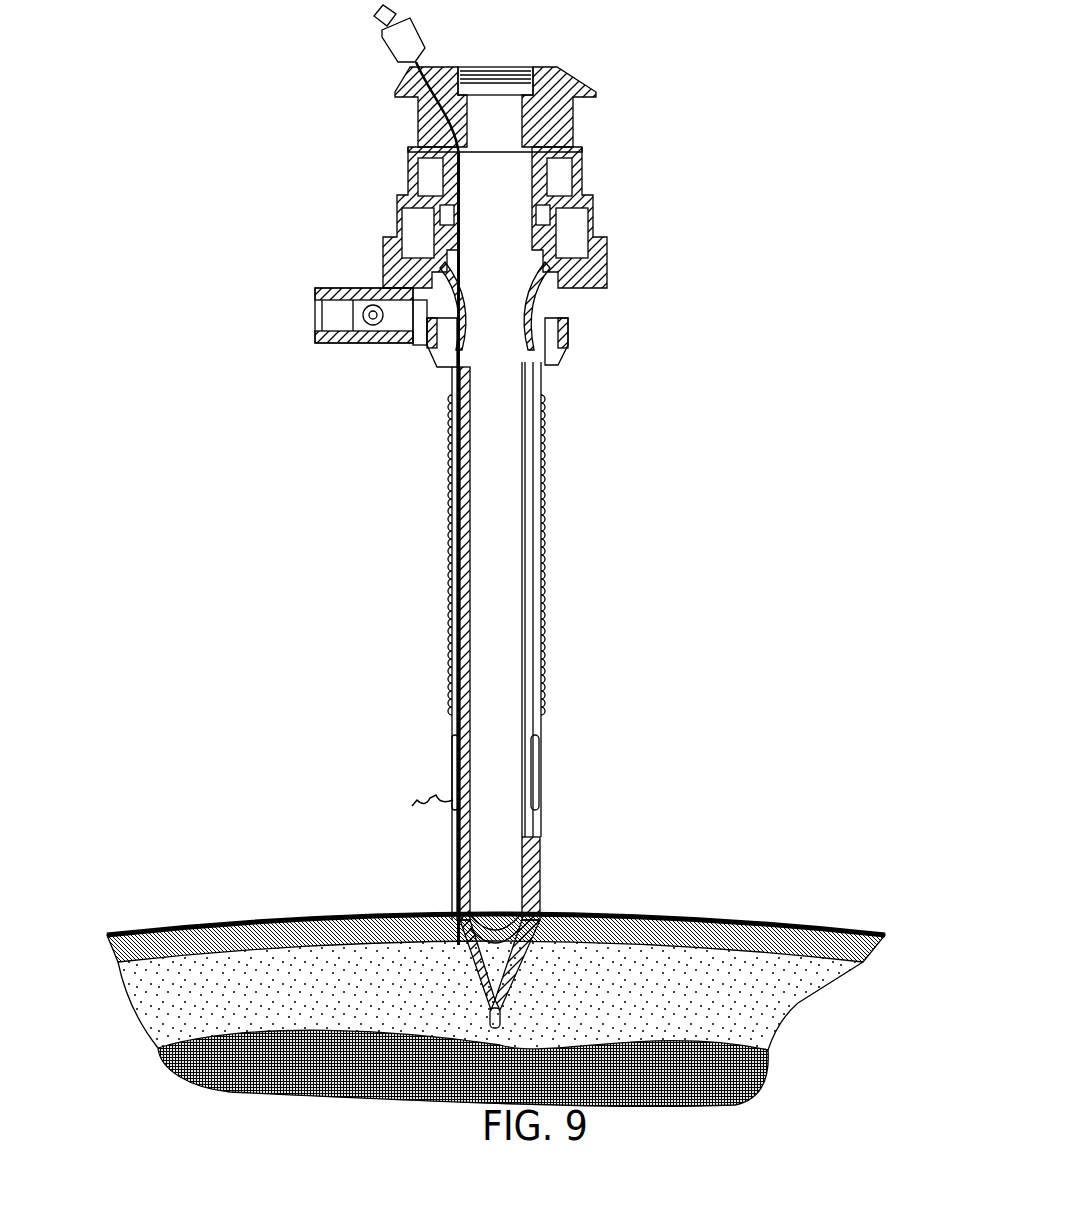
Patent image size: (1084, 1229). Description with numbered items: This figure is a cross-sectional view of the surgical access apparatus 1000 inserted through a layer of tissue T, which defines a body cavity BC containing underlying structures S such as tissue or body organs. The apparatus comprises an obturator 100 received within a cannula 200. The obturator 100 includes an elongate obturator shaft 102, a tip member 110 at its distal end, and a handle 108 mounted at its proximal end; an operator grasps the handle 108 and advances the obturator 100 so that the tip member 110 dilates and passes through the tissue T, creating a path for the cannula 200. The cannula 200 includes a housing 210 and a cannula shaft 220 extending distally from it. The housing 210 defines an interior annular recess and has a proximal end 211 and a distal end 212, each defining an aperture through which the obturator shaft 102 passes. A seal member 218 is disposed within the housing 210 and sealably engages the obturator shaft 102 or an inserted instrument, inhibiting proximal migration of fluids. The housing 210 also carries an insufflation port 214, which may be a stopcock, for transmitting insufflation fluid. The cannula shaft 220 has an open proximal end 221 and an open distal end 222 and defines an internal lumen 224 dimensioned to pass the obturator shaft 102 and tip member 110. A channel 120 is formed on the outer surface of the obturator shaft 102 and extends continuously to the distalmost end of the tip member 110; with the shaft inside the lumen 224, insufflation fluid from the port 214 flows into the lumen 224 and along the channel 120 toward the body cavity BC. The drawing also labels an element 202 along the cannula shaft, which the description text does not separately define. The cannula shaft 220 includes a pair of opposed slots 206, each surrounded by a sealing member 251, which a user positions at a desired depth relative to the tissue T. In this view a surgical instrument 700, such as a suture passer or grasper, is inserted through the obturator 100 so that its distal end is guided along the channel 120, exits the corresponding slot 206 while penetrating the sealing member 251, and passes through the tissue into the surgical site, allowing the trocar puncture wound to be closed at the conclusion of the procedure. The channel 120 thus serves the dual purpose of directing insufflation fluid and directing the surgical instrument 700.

The surgical access apparatus 1000 is at (371, 80).
The obturator 100 is at (640, 68).
The obturator shaft 102 is at (525, 497).
The handle 108 is at (400, 68).
The tip member 110 is at (438, 862).
The channel 120 is at (458, 405).
The cannula 200 is at (426, 284).
The cannula 202 is at (453, 442).
The opposed slots 206 is at (455, 775).
The housing 210 is at (390, 170).
The proximal end 211 is at (578, 148).
The distal end 212 is at (547, 365).
The insufflation port 214 is at (363, 274).
The seal member 218 is at (543, 283).
The cannula shaft 220 is at (540, 545).
The open proximal end 221 is at (430, 316).
The open distal end 222 is at (538, 883).
The internal lumen 224 is at (530, 658).
The sealing member 251 is at (436, 795).
The surgical instrument 700 is at (412, 42).
The tissue T is at (203, 925).
The body cavity BC is at (236, 967).
The underlying structures S is at (735, 1042).